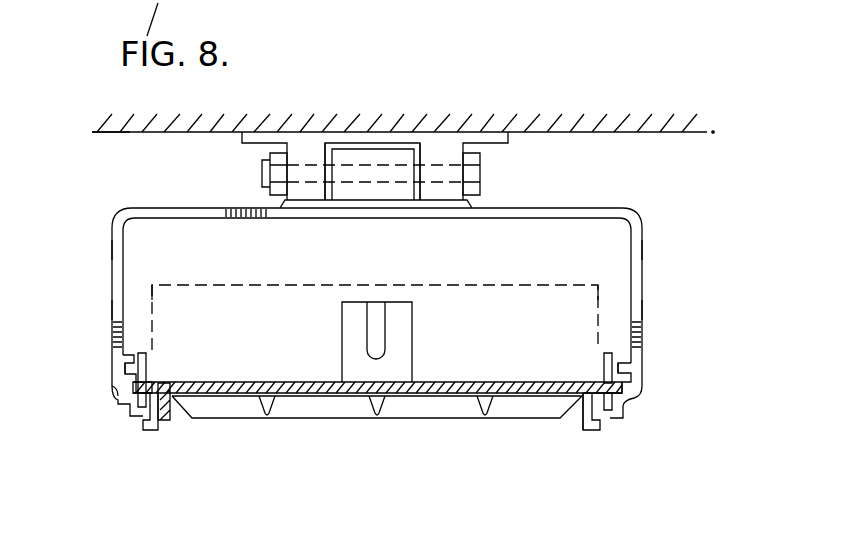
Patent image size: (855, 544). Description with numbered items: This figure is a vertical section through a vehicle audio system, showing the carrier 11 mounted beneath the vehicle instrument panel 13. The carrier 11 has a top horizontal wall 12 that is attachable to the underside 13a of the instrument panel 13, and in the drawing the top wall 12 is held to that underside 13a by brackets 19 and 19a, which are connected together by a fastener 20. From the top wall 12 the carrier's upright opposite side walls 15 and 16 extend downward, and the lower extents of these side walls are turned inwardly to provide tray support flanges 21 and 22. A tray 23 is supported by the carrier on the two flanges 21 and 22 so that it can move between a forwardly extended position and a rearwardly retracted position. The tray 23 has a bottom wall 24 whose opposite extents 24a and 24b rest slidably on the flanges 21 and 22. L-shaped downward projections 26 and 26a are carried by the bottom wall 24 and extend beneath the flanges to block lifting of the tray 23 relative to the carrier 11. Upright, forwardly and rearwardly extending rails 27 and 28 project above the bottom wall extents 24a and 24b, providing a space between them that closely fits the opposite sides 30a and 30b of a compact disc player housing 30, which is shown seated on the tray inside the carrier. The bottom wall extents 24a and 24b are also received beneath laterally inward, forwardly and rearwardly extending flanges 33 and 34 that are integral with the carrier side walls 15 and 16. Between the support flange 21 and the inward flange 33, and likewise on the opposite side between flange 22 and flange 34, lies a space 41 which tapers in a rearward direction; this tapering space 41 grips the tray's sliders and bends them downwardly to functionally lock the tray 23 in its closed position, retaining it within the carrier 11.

The carrier 11 is at (654, 222).
The top horizontal wall 12 is at (195, 198).
The vehicle instrument panel 13 is at (642, 124).
The underside of vehicle instrument panel 13a is at (112, 133).
The side wall 15 is at (638, 258).
The side wall 16 is at (112, 246).
The bracket 19 is at (375, 125).
The bracket 19a is at (355, 155).
The fastener 20 is at (483, 185).
The tray support flange 21 is at (120, 412).
The tray support flange 22 is at (618, 412).
The tray 23 is at (437, 398).
The bottom wall 24 is at (447, 383).
The bottom wall extent 24a is at (130, 392).
The bottom wall extent 24b is at (622, 400).
The L-shaped downward projection 26 is at (152, 432).
The L-shaped downward projection 26a is at (586, 426).
The rail 27 is at (146, 356).
The rail 28 is at (604, 358).
The compact disc player housing 30 is at (547, 283).
The side of compact disc player housing 30a is at (152, 296).
The side of compact disc player housing 30b is at (598, 298).
The flange 33 is at (114, 352).
The flange 34 is at (632, 362).
The space 41 is at (122, 374).